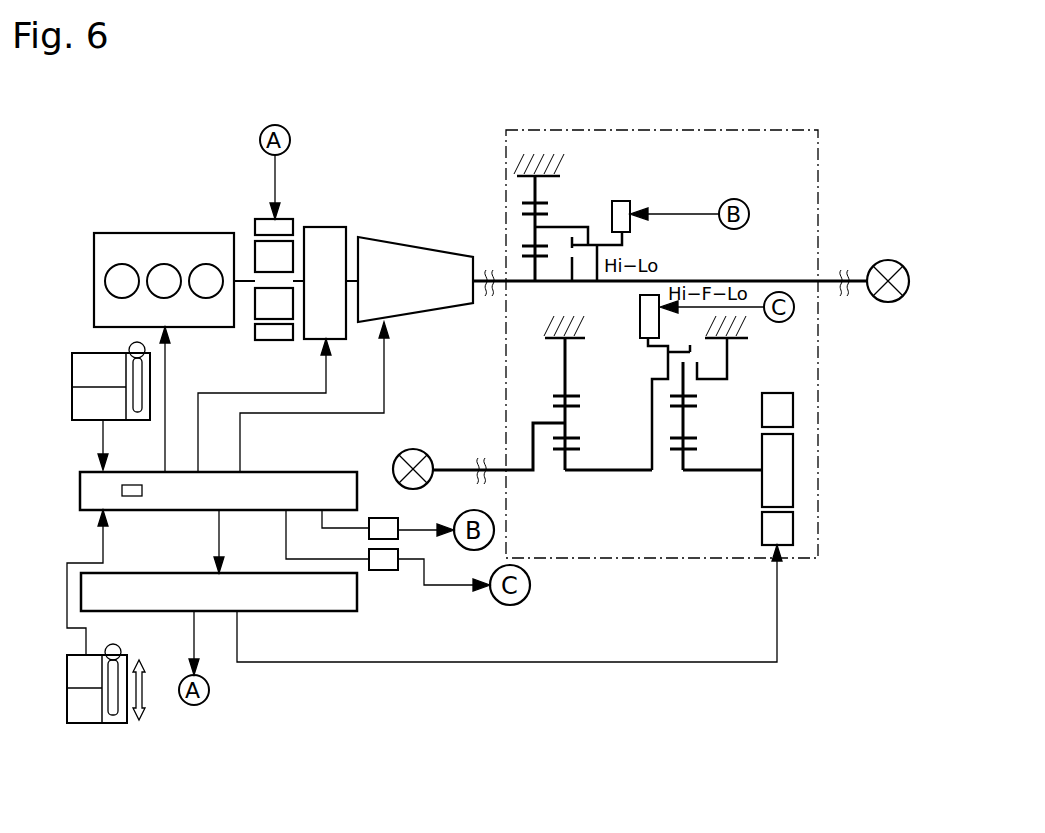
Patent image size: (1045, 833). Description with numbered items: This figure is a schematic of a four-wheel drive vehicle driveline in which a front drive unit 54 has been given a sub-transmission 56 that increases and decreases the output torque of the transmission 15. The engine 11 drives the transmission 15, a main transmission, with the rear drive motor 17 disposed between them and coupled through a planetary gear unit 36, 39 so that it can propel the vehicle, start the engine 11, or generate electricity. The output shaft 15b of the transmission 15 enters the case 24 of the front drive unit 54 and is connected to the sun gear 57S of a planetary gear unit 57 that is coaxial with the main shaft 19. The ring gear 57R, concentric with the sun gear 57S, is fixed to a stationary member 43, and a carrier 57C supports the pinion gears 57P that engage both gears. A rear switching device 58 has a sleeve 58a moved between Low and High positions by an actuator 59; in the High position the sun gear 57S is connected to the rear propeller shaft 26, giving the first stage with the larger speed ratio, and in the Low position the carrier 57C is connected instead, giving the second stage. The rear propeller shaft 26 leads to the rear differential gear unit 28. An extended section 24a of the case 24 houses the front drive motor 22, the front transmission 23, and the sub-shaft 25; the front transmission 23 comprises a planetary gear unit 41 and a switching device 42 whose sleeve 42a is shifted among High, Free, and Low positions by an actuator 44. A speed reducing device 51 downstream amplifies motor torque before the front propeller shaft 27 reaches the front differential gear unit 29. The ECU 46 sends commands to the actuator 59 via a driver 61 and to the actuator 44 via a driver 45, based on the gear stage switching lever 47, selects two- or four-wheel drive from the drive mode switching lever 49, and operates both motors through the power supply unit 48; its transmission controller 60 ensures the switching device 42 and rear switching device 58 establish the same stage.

The engine 11 is at (106, 226).
The rear drive motor 17 is at (258, 210).
The planetary gear unit 36 is at (355, 244).
The forward/reverse switching device clutch 39 is at (334, 216).
The transmission 15 is at (392, 225).
The output shaft 15b is at (496, 295).
The planetary gear unit 57 is at (580, 203).
The ring gear 57R is at (526, 192).
The pinion gears 57P is at (522, 210).
The sun gear 57S is at (524, 250).
The carrier 57C is at (568, 226).
The stationary member 43 is at (550, 174).
The sub-transmission 56 is at (552, 130).
The rear switching device 58 is at (650, 166).
The sleeve 58a is at (568, 254).
The actuator 59 is at (630, 205).
The front drive unit 54 is at (785, 120).
The case 24 is at (818, 160).
The extended section 24a is at (818, 497).
The main shaft 19 is at (782, 278).
The rear propeller shaft 26 is at (828, 290).
The rear differential gear unit 28 is at (890, 302).
The actuator 44 is at (652, 293).
The switching device 42 is at (648, 363).
The sleeve 42a is at (690, 328).
The front drive motor 22 is at (805, 458).
The sub-shaft 25 is at (523, 475).
The front propeller shaft 27 is at (495, 462).
The front differential gear unit 29 is at (418, 448).
The speed reducing device 51 is at (605, 504).
The front transmission 23 is at (688, 496).
The planetary gear unit 41 is at (712, 496).
The ECU 46 is at (218, 469).
The transmission controller 60 is at (131, 485).
The driver 61 is at (380, 517).
The driver 45 is at (385, 571).
The power supply unit 48 is at (315, 612).
The drive mode switching lever 49 is at (72, 395).
The gear stage switching lever 47 is at (115, 723).